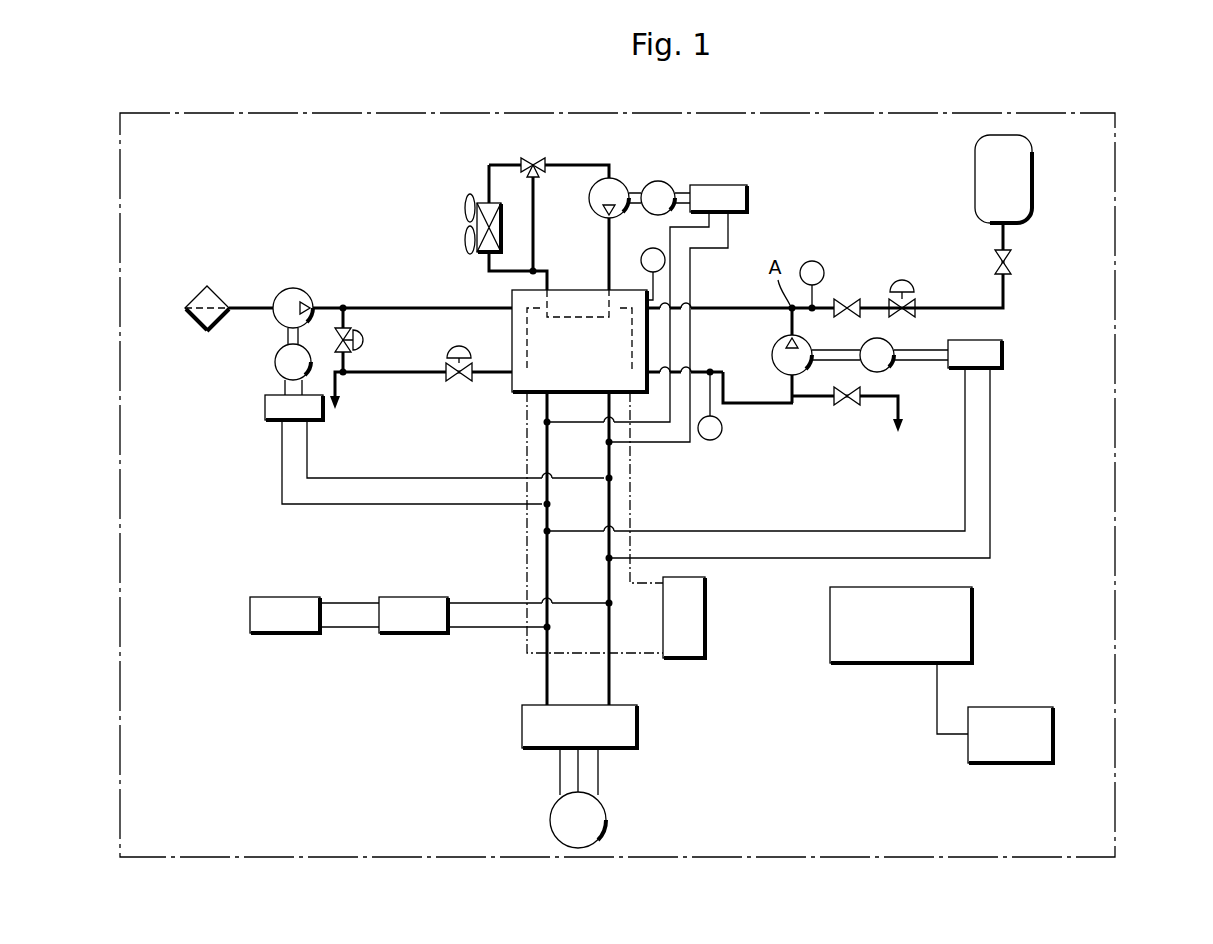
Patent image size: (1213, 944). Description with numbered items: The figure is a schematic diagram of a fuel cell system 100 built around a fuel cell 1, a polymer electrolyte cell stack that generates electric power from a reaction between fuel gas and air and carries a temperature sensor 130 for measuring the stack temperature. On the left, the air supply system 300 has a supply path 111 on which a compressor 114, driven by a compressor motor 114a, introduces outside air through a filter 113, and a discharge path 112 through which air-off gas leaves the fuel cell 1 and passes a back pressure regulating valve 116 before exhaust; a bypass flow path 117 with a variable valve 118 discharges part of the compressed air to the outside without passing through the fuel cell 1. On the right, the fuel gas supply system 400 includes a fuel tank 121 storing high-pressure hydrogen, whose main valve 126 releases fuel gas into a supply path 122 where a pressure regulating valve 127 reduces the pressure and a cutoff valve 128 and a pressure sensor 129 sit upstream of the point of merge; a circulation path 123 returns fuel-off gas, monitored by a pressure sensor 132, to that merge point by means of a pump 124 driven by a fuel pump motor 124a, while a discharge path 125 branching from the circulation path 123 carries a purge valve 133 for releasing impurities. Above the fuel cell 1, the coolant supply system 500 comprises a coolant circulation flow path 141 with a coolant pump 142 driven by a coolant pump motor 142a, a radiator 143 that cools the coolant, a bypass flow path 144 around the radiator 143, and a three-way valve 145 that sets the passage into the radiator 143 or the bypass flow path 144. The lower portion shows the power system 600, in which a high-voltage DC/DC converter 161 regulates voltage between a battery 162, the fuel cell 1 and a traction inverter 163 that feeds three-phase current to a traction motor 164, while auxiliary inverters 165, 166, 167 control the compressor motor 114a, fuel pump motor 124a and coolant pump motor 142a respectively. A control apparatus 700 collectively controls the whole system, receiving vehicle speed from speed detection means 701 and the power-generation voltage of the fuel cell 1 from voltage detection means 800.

The fuel cell system 100 is at (1115, 165).
The fuel cell 1 is at (525, 395).
The supply path 111 is at (445, 303).
The discharge path 112 is at (345, 378).
The filter 113 is at (220, 290).
The compressor 114 is at (290, 288).
The compressor motor 114a is at (275, 362).
The back pressure regulating valve 116 is at (458, 385).
The bypass flow path 117 is at (340, 300).
The variable valve 118 is at (348, 325).
The fuel tank 121 is at (1035, 175).
The supply path 122 is at (1008, 300).
The circulation path 123 is at (765, 405).
The pump 124 is at (775, 345).
The fuel pump motor 124a is at (860, 348).
The discharge path 125 is at (905, 408).
The main valve 126 is at (1010, 258).
The pressure regulating valve 127 is at (912, 300).
The cutoff valve 128 is at (840, 297).
The pressure sensor 129 is at (812, 258).
The temperature sensor 130 is at (645, 252).
The pressure sensor 132 is at (720, 437).
The purge valve 133 is at (847, 408).
The coolant circulation flow path 141 is at (585, 165).
The coolant pump 142 is at (622, 182).
The coolant pump motor 142a is at (668, 182).
The radiator 143 is at (462, 205).
The bypass flow path 144 is at (535, 240).
The three-way valve 145 is at (540, 158).
The high-voltage DC/DC converter 161 is at (415, 595).
The battery 162 is at (300, 595).
The traction inverter 163 is at (640, 712).
The traction motor 164 is at (608, 808).
The auxiliary inverter 165 is at (262, 410).
The auxiliary inverter 166 is at (1005, 358).
The auxiliary inverter 167 is at (750, 200).
The air supply system 300 is at (372, 251).
The fuel gas supply system 400 is at (920, 258).
The coolant supply system 500 is at (489, 158).
The power system 600 is at (654, 502).
The control apparatus 700 is at (885, 665).
The speed detection means 701 is at (1015, 765).
The voltage detection means 800 is at (707, 620).